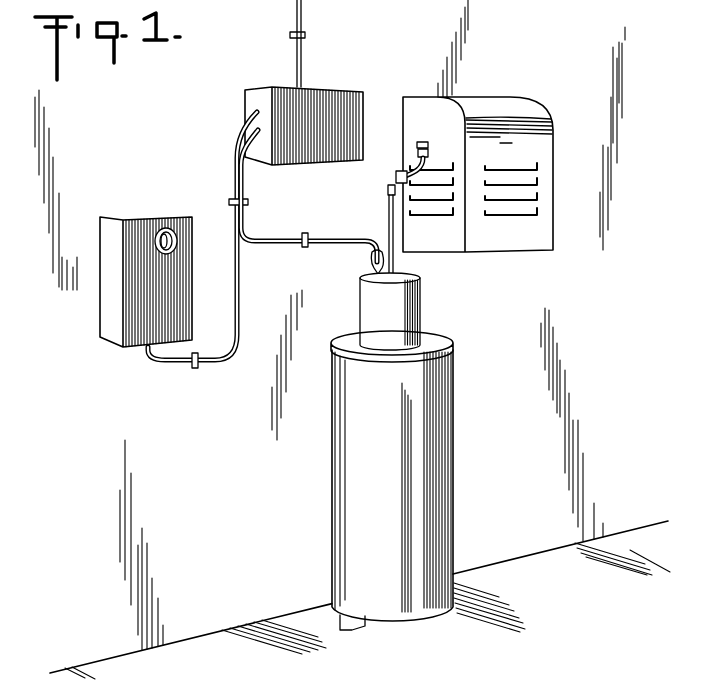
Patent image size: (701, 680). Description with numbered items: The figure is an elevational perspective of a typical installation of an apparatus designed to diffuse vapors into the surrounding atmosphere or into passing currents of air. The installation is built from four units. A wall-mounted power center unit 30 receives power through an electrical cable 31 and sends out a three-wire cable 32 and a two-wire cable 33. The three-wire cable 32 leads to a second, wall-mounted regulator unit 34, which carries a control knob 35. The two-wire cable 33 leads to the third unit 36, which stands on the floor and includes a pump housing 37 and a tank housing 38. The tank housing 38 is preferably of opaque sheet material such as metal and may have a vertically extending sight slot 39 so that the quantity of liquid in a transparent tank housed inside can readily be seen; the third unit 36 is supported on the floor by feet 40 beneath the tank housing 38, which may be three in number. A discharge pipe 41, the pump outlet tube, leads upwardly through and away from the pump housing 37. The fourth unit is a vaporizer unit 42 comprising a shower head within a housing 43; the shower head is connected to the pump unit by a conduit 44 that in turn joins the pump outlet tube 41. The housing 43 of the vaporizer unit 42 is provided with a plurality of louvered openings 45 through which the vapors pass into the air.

The power center unit 30 is at (350, 85).
The electrical cable 31 is at (301, 66).
The three-wire cable 32 is at (235, 157).
The two-wire cable 33 is at (243, 187).
The regulator unit 34 is at (161, 266).
The control knob 35 is at (178, 240).
The third unit 36 is at (438, 326).
The pump housing 37 is at (423, 297).
The tank housing 38 is at (413, 485).
The sight slot 39 is at (425, 503).
The feet 40 is at (344, 626).
The discharge pipe 41 is at (395, 268).
The vaporizer unit 42 is at (541, 100).
The housing 43 is at (470, 174).
The conduit 44 is at (412, 168).
The louvered openings 45 is at (413, 200).